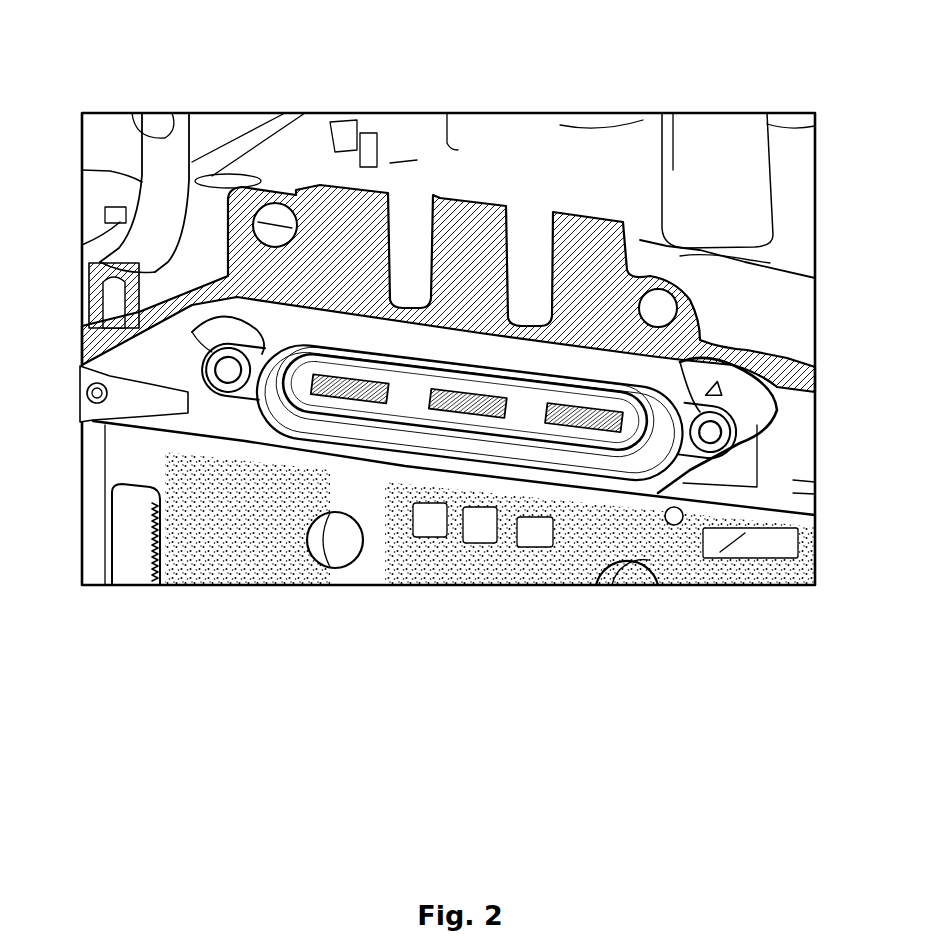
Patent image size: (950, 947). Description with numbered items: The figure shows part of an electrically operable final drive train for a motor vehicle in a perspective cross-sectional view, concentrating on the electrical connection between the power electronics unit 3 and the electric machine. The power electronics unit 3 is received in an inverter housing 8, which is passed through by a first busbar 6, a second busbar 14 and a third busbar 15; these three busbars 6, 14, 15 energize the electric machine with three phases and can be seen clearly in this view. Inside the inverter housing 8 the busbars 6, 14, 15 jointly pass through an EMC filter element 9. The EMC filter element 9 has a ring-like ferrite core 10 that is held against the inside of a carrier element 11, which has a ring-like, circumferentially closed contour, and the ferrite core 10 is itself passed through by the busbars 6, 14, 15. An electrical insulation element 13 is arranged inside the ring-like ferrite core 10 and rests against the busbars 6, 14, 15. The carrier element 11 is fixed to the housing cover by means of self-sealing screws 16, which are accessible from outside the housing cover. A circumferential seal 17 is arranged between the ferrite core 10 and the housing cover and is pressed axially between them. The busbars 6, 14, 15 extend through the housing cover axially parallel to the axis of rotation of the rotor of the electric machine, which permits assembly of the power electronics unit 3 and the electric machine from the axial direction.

The power electronics unit 3 is at (454, 577).
The first busbar 6 is at (580, 430).
The inverter housing 8 is at (476, 237).
The EMC filter element 9 is at (507, 505).
The ferrite core 10 is at (635, 473).
The carrier element 11 is at (752, 418).
The electrical insulation element 13 is at (410, 406).
The second busbar 14 is at (463, 412).
The third busbar 15 is at (350, 397).
The self-sealing screws 16 is at (224, 372).
The circumferential seal 17 is at (278, 345).